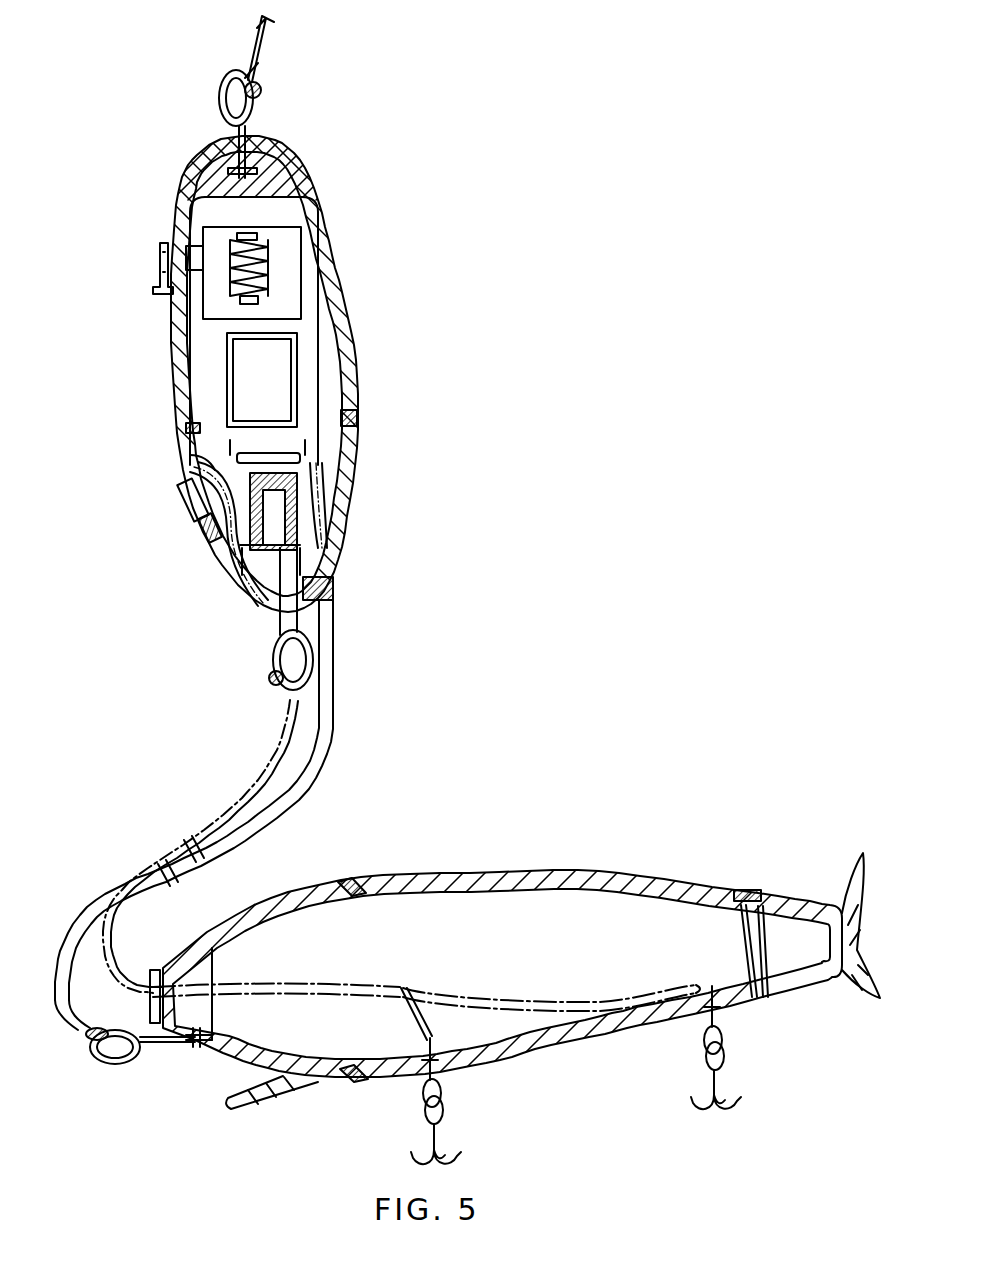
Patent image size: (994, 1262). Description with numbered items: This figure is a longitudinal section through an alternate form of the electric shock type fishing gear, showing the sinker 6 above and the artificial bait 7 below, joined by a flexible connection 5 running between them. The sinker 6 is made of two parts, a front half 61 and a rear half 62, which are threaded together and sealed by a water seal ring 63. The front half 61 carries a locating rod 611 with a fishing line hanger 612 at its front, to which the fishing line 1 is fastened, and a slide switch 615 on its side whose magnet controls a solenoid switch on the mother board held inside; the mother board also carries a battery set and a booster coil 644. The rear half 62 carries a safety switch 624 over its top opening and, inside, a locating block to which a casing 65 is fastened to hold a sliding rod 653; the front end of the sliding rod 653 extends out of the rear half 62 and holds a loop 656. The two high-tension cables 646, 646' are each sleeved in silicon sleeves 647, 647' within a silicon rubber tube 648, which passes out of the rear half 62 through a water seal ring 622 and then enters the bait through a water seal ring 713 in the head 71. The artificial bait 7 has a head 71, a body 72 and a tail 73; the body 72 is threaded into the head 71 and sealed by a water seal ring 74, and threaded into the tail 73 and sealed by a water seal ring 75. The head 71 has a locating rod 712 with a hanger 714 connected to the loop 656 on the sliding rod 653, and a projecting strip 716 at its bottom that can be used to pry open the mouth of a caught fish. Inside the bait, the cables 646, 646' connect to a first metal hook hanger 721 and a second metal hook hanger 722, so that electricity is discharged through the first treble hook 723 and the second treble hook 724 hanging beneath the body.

The fishing line 1 is at (266, 48).
The cable 5 is at (123, 877).
The sinker 6 is at (352, 313).
The artificial bait 7 is at (500, 870).
The front half 61 is at (297, 185).
The rear half 62 is at (190, 460).
The water seal ring 63 is at (358, 418).
The casing 65 is at (258, 530).
The head 71 is at (313, 893).
The body 72 is at (457, 880).
The tail 73 is at (790, 900).
The water seal ring 74 is at (355, 887).
The water seal ring 75 is at (743, 893).
The locating rod 611 is at (250, 130).
The fishing line hanger 612 is at (226, 76).
The slide switch 615 is at (158, 258).
The water seal ring 622 is at (334, 580).
The safety switch 624 is at (198, 527).
The booster coil 644 is at (266, 243).
The high-tension cable 646 is at (712, 984).
The high-tension cable 646' is at (445, 1034).
The silicon sleeve 647 is at (426, 745).
The silicon sleeve 647' is at (370, 505).
The silicon rubber tube 648 is at (335, 690).
The sliding rod 653 is at (281, 623).
The loop 656 is at (274, 667).
The locating rod 712 is at (158, 1047).
The water seal ring 713 is at (153, 970).
The hanger 714 is at (104, 1063).
The projecting strip 716 is at (264, 1096).
The first metal hook hanger 721 is at (421, 1093).
The second metal hook hanger 722 is at (708, 1037).
The first treble hook 723 is at (447, 1117).
The second treble hook 724 is at (728, 1060).